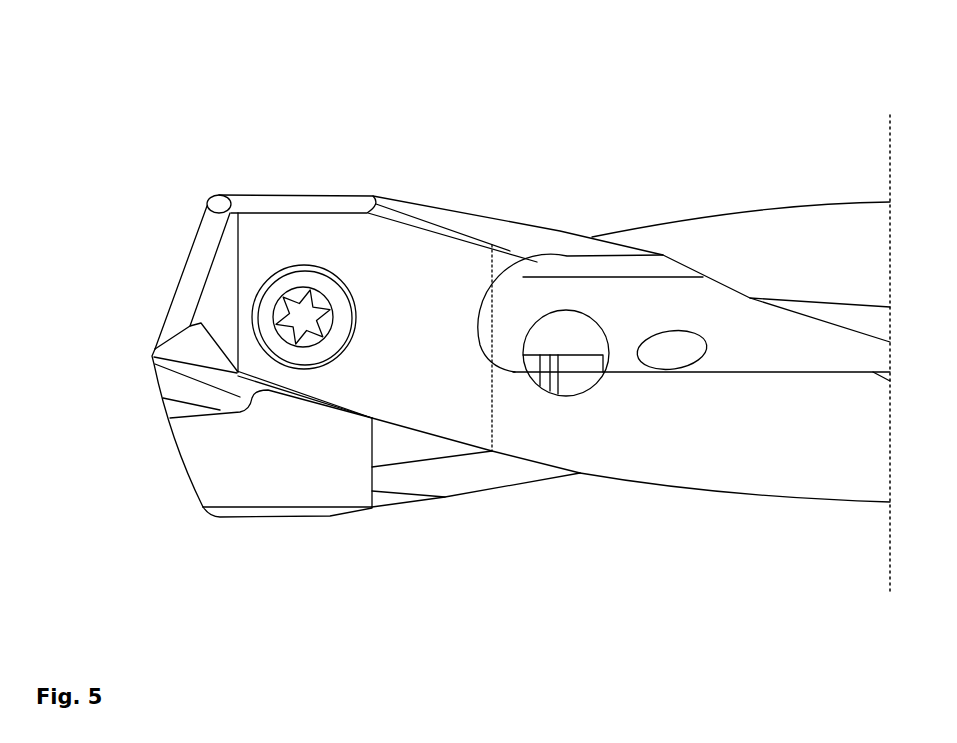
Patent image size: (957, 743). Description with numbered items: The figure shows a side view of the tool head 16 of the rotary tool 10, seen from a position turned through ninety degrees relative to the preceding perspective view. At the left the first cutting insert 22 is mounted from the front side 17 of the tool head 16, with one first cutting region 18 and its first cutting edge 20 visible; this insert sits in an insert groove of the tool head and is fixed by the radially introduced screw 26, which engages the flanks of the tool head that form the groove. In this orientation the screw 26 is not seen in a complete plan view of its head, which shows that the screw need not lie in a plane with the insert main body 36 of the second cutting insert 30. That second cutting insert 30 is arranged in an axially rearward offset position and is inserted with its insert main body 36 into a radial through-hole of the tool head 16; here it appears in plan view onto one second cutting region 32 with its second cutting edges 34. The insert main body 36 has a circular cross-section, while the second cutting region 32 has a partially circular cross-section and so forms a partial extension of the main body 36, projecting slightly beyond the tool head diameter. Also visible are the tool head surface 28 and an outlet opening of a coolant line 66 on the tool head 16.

The rotary tool 10 is at (460, 310).
The tool head 16 is at (800, 228).
The front side 17 is at (108, 353).
The first cutting region 18 is at (157, 380).
The first cutting edge 20 is at (220, 416).
The first cutting insert 22 is at (173, 308).
The screw 26 is at (305, 357).
The tool head surface 28 is at (744, 497).
The second cutting insert 30 is at (584, 312).
The second cutting region 32 is at (580, 370).
The second cutting edge 34 is at (549, 374).
The insert main body 36 is at (551, 333).
The coolant line 66 is at (670, 346).